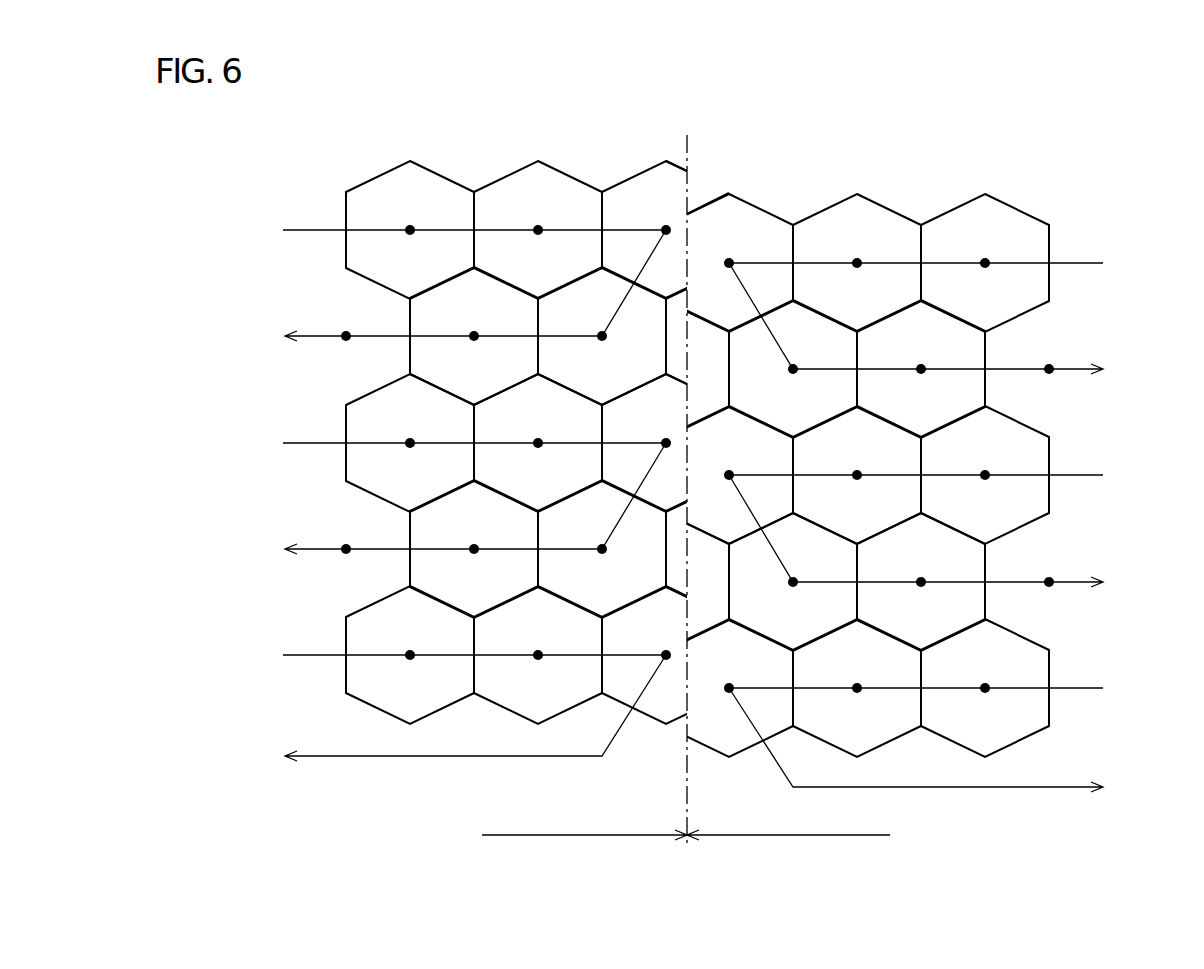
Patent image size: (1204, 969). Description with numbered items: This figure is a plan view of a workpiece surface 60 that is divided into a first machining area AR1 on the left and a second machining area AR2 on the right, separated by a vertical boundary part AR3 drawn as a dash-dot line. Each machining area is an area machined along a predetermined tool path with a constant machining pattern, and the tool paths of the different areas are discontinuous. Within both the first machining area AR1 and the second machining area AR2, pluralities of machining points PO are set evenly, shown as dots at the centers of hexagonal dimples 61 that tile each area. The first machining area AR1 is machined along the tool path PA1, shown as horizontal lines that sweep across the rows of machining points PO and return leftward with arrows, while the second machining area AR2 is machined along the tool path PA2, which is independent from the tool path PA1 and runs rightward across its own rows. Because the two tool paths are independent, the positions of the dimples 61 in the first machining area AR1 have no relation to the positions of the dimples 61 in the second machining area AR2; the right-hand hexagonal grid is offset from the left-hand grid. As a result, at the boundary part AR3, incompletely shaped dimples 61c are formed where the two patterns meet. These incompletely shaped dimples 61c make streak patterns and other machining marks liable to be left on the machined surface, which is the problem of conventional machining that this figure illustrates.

The hexagonal cell pattern 60 is at (980, 106).
The dimple 61 is at (500, 187).
The incompletely shaped dimple 61c is at (740, 213).
The machining point PO is at (410, 228).
The tool path PA1 is at (452, 499).
The tool path PA2 is at (937, 531).
The first machining area AR1 is at (550, 825).
The second machining area AR2 is at (831, 825).
The boundary part AR3 is at (690, 119).